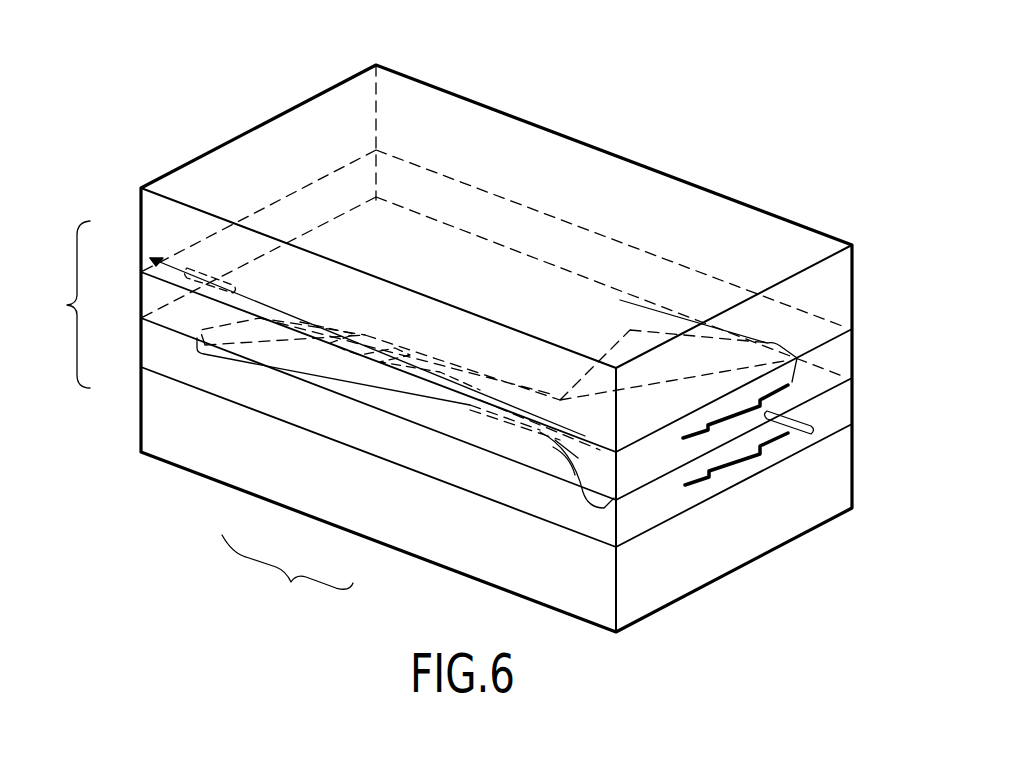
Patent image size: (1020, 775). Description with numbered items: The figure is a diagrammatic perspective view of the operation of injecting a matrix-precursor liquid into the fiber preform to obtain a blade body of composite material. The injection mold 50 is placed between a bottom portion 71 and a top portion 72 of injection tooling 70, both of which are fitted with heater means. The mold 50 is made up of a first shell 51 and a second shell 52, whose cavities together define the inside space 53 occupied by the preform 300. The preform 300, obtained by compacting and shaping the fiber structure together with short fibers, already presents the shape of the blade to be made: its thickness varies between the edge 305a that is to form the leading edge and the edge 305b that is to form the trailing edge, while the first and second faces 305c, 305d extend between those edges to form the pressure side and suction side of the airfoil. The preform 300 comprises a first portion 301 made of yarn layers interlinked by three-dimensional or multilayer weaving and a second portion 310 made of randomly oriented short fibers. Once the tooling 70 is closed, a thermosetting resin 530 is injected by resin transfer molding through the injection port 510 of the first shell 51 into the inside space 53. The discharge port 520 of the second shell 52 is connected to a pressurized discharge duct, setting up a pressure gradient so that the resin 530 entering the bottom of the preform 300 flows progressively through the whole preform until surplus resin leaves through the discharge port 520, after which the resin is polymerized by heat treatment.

The injection mold 50 is at (378, 504).
The first shell 51 is at (407, 447).
The second shell 52 is at (333, 378).
The inside space 53 is at (520, 438).
The injection tooling 70 is at (62, 304).
The bottom portion 71 is at (143, 410).
The top portion 72 is at (143, 218).
The preform 300 is at (593, 306).
The first portion 301 is at (460, 347).
The edge 305a is at (258, 365).
The edge 305b is at (553, 258).
The first face 305c is at (465, 403).
The second face 305d is at (632, 332).
The second portion 310 is at (323, 333).
The injection port 510 is at (788, 424).
The discharge port 520 is at (218, 292).
The resin 530 is at (818, 433).